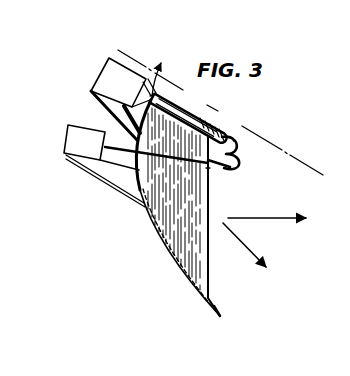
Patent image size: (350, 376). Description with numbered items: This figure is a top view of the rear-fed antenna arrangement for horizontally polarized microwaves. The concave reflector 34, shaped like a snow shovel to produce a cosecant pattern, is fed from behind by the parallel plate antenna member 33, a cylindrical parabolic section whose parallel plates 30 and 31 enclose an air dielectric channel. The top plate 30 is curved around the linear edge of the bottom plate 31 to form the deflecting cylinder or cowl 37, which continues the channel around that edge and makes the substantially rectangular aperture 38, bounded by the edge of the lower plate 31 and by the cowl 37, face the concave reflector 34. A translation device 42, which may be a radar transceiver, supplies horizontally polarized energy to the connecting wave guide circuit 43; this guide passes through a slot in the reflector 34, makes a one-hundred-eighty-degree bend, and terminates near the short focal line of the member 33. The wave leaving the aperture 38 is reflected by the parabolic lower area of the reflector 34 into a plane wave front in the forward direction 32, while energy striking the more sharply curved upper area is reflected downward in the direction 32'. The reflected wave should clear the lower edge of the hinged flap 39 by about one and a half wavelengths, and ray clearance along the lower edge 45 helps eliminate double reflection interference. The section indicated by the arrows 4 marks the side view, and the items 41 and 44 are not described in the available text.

The section line 4- 4 is at (124, 48).
The parallel plate 30 is at (213, 123).
The parallel plate 31 is at (221, 134).
The direction 32 is at (267, 211).
The direction 32' is at (257, 245).
The parallel plate antenna member 33 is at (188, 116).
The concave reflector 34 is at (160, 230).
The deflecting cylinder or cowl 37 is at (237, 152).
The aperture 38 is at (236, 141).
The hinged flap 39 is at (214, 166).
The body edge 41 is at (209, 167).
The translation device 42 is at (101, 72).
The connecting wave guide circuit 43 is at (161, 73).
The lower box / housing 44 is at (68, 137).
The lower edge 45 is at (223, 316).